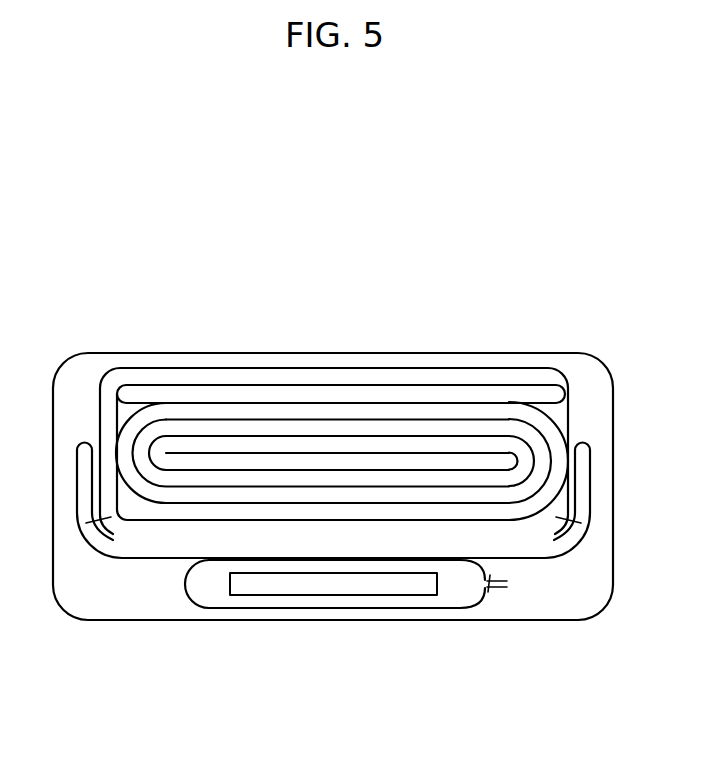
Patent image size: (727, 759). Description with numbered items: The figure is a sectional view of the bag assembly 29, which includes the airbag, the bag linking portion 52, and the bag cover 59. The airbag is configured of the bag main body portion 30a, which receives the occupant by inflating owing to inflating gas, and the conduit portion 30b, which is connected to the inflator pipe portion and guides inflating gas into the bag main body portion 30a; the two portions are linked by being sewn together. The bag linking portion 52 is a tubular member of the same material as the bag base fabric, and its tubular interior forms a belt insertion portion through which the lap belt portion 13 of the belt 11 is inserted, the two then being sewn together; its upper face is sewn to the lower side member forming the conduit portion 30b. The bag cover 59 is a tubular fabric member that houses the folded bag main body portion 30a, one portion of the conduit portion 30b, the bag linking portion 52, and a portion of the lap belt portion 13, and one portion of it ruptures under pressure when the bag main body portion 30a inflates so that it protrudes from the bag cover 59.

The bag cover 59 is at (130, 352).
The bag assembly 29 is at (545, 331).
The bag main body portion 30a is at (337, 368).
The conduit portion 30b is at (537, 560).
The bag linking portion 52 is at (185, 586).
The lap belt portion 13 is at (335, 596).
The heater 11 is at (333, 584).